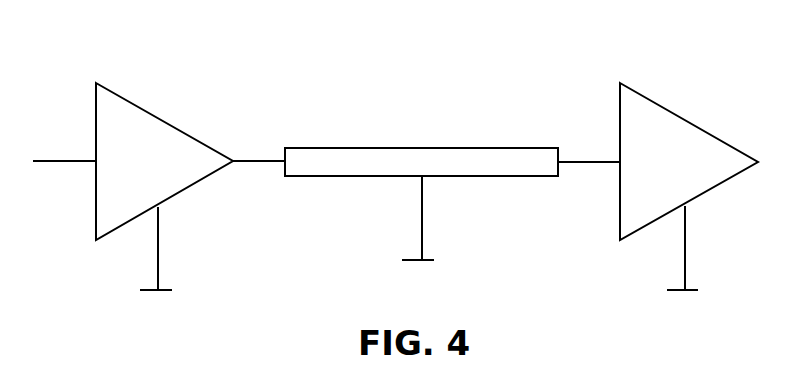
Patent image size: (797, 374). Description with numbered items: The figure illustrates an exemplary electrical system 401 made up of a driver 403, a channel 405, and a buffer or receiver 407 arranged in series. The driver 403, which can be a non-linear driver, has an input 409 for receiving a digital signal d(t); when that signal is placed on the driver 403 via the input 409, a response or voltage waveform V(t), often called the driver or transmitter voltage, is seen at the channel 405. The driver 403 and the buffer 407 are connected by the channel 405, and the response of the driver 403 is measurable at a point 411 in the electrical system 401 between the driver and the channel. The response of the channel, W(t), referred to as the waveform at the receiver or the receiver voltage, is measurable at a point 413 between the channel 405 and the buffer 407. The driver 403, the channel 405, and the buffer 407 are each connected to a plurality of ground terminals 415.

The electrical system 401 is at (269, 62).
The driver 403 is at (164, 161).
The channel 405 is at (421, 162).
The buffer or receiver 407 is at (689, 161).
The input 409 is at (57, 146).
The point 411 is at (267, 165).
The point 413 is at (608, 160).
The ground terminals 415 is at (158, 263).